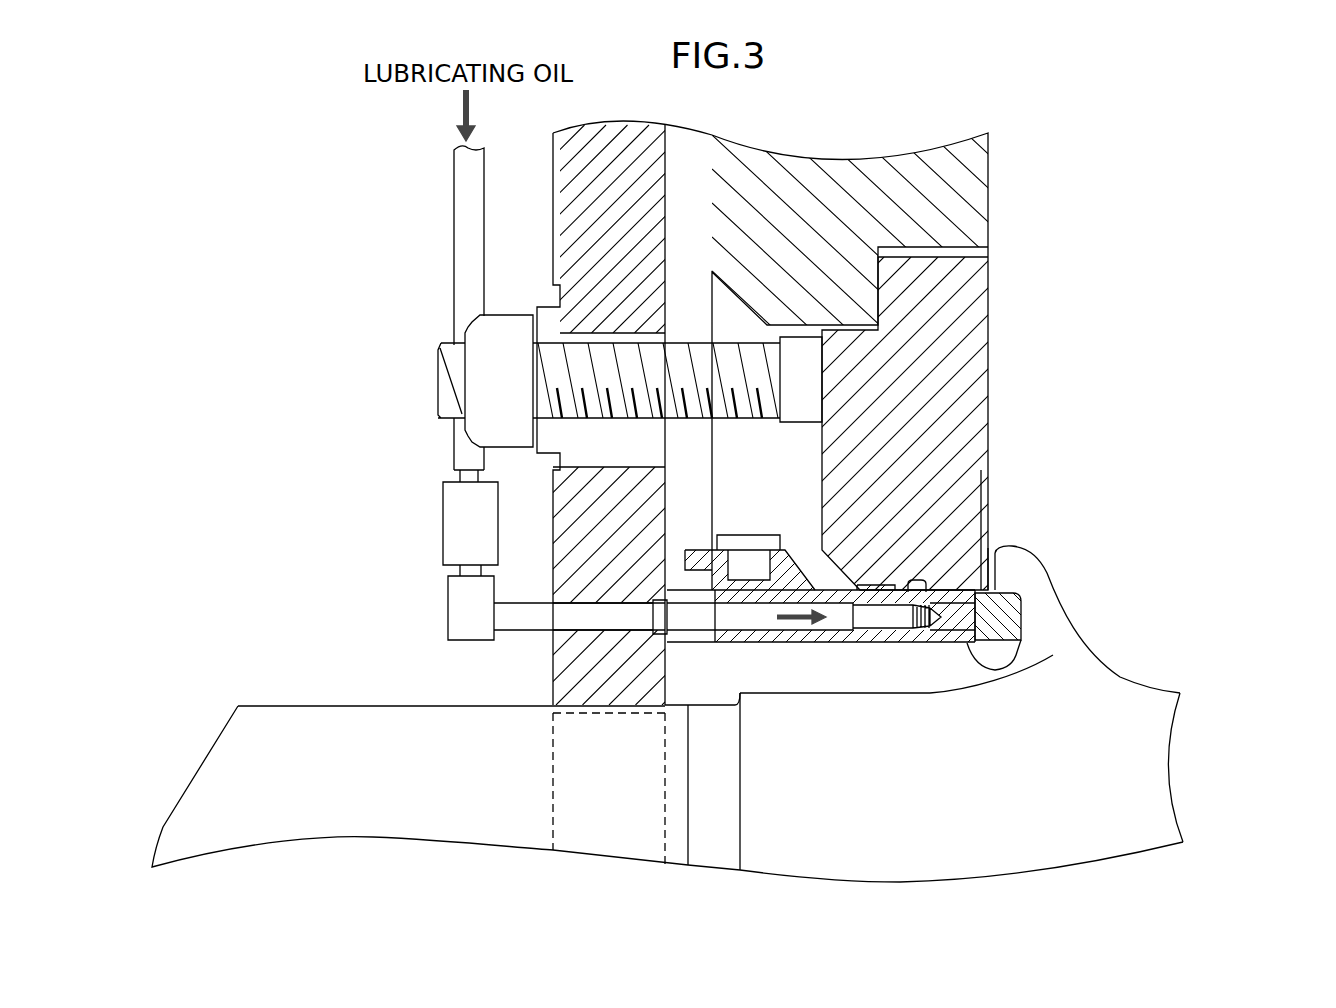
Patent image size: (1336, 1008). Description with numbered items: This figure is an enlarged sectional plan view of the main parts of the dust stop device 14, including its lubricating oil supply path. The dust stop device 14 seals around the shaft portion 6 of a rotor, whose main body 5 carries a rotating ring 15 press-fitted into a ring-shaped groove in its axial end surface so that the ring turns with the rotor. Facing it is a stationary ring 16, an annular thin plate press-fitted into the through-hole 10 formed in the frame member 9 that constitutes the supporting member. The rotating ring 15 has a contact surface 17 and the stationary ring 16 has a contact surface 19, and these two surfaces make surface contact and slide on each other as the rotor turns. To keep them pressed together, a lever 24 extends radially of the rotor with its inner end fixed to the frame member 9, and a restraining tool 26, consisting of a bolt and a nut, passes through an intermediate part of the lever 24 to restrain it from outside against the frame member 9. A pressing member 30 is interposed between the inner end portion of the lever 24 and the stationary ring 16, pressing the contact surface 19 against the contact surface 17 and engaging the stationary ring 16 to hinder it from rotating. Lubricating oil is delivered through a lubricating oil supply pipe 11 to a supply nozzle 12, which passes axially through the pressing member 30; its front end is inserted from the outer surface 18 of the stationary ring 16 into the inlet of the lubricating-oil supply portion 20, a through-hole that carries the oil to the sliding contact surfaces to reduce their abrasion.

The main body 5 is at (1157, 806).
The shaft portion 6 is at (292, 722).
The frame member 9 is at (830, 170).
The through-hole 10 is at (928, 667).
The lubricating oil supply pipe 11 is at (460, 213).
The supply nozzle 12 is at (743, 622).
The dust stop device 14 is at (998, 542).
The rotating ring 15 is at (1023, 591).
The stationary ring 16 is at (967, 590).
The contact surface 17 is at (1053, 655).
The outer surface 18 is at (878, 640).
The contact surface 19 is at (1065, 652).
The lubricating-oil supply portion 20 is at (950, 592).
The lever 24 is at (556, 208).
The restraining tool 26 is at (414, 376).
The pressing member 30 is at (800, 567).